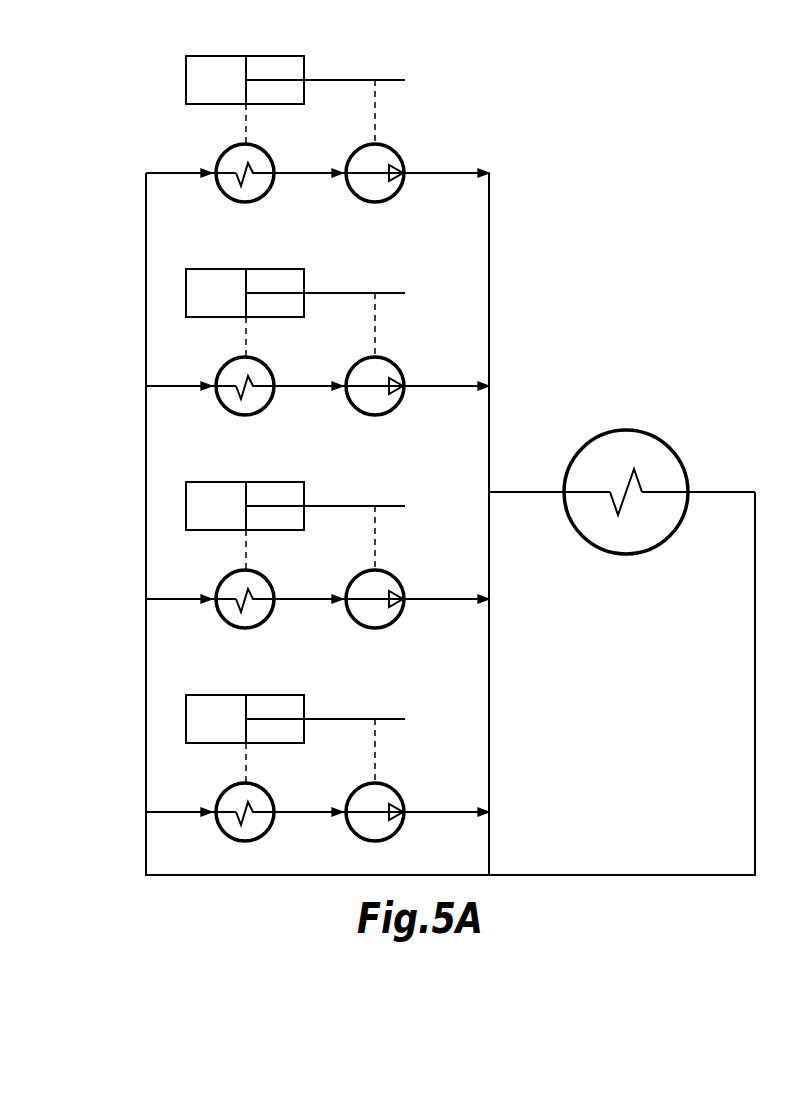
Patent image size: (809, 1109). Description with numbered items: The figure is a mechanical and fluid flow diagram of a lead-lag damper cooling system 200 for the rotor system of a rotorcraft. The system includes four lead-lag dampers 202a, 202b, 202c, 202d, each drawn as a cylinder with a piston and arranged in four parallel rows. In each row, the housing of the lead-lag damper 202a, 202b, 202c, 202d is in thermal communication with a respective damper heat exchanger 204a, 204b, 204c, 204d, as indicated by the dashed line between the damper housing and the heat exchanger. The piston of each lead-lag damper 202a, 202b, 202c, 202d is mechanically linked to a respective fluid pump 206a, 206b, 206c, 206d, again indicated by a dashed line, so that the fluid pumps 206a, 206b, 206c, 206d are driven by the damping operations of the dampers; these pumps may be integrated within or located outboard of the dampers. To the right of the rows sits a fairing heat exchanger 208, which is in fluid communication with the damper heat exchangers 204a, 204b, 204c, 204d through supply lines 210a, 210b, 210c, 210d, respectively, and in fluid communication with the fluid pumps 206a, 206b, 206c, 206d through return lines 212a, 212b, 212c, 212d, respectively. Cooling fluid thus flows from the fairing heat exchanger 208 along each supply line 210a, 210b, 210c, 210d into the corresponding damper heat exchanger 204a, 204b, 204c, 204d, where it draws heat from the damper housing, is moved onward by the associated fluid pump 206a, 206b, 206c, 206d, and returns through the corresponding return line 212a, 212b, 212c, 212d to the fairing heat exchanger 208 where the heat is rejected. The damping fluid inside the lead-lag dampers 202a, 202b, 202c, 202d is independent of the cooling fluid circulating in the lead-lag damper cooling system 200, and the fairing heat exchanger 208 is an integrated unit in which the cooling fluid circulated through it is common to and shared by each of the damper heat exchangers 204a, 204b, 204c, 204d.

The lead-lag damper cooling system 200 is at (550, 160).
The lead-lag damper 202a is at (280, 56).
The lead-lag damper 202b is at (280, 269).
The lead-lag damper 202c is at (280, 482).
The lead-lag damper 202d is at (280, 695).
The damper heat exchanger 204a is at (245, 202).
The damper heat exchanger 204b is at (245, 415).
The damper heat exchanger 204c is at (245, 628).
The damper heat exchanger 204d is at (245, 841).
The fluid pump 206a is at (375, 202).
The fluid pump 206b is at (375, 415).
The fluid pump 206c is at (375, 628).
The fluid pump 206d is at (375, 841).
The fairing heat exchanger 208 is at (625, 430).
The supply line 210a is at (173, 172).
The supply line 210b is at (173, 385).
The supply line 210c is at (173, 598).
The supply line 210d is at (173, 811).
The return line 212a is at (438, 172).
The return line 212b is at (438, 385).
The return line 212c is at (438, 598).
The return line 212d is at (438, 811).